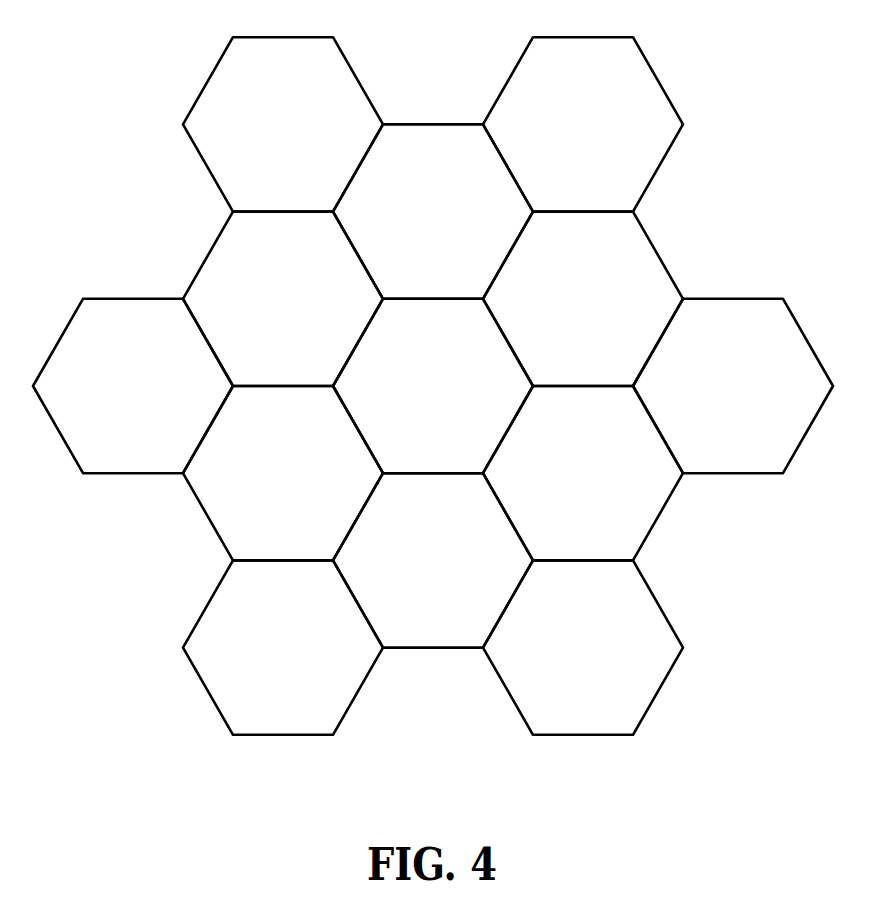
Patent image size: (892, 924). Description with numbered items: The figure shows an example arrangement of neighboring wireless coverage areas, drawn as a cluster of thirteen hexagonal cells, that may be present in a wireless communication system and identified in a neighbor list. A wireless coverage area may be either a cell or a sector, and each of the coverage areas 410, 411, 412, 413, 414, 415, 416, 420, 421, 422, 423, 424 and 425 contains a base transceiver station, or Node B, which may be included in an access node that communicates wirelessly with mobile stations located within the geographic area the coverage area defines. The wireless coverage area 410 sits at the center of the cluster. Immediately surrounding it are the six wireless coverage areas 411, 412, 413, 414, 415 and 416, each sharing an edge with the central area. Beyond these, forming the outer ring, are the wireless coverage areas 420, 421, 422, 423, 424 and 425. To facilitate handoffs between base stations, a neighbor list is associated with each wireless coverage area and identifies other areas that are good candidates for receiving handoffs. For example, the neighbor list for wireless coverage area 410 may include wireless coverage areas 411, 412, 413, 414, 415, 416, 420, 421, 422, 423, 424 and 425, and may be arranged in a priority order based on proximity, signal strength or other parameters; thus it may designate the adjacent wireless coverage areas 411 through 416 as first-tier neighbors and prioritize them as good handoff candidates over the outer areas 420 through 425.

The wireless coverage area 410 is at (417, 375).
The wireless coverage area 411 is at (417, 200).
The wireless coverage area 412 is at (567, 292).
The wireless coverage area 413 is at (567, 465).
The wireless coverage area 414 is at (417, 550).
The wireless coverage area 415 is at (267, 465).
The wireless coverage area 416 is at (267, 292).
The wireless coverage area 420 is at (267, 117).
The wireless coverage area 421 is at (567, 117).
The wireless coverage area 422 is at (717, 377).
The wireless coverage area 423 is at (567, 630).
The wireless coverage area 424 is at (267, 630).
The wireless coverage area 425 is at (117, 368).